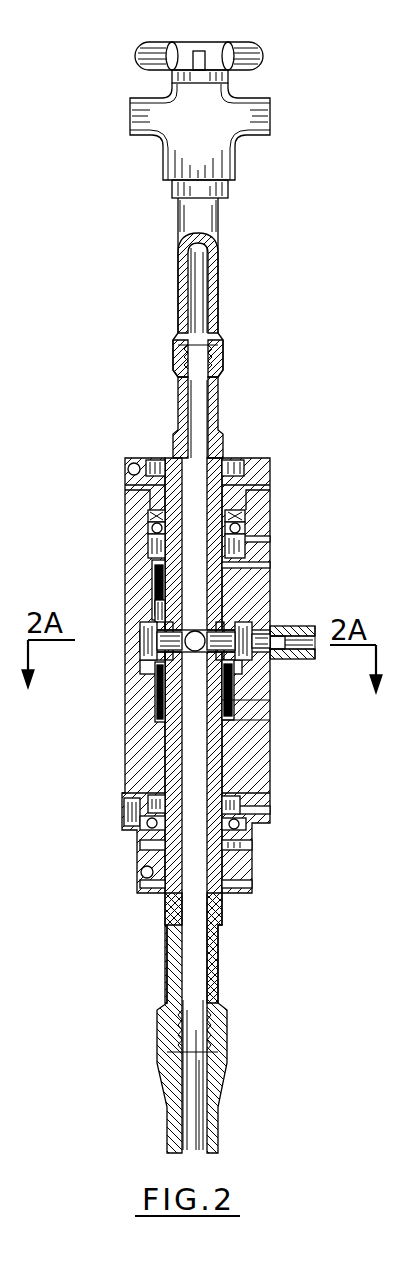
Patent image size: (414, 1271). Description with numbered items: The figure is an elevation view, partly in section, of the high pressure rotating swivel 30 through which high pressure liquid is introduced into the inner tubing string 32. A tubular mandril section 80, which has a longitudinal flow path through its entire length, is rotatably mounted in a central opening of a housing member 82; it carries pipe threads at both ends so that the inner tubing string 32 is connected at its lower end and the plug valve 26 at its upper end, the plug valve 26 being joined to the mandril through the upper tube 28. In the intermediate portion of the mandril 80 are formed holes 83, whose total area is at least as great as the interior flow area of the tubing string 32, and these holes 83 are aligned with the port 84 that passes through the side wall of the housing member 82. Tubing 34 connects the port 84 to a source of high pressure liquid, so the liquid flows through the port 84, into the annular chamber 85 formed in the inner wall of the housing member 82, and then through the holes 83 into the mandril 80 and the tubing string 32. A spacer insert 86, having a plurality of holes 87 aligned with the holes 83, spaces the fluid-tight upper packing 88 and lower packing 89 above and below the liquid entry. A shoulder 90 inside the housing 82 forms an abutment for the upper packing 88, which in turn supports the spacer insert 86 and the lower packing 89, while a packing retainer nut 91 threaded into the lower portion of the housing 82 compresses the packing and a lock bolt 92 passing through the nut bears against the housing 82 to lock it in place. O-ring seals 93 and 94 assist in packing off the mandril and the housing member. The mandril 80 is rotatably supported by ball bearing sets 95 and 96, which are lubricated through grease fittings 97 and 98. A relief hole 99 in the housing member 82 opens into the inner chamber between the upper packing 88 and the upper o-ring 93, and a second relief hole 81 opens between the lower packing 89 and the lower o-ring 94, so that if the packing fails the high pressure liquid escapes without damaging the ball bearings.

The plug valve 26 is at (158, 157).
The upper tube 28 is at (218, 268).
The high pressure rotating swivel 30 is at (272, 497).
The inner tubing string 32 is at (217, 1128).
The tubing 34 is at (292, 626).
The mandril section 80 is at (172, 428).
The second relief hole 81 is at (268, 717).
The housing member 82 is at (122, 745).
The holes 83 is at (196, 652).
The port 84 is at (262, 662).
The annular chamber 85 is at (150, 636).
The spacer insert 86 is at (165, 610).
The holes 87 is at (150, 645).
The upper packing 88 is at (160, 587).
The lower packing 89 is at (160, 691).
The shoulder 90 is at (160, 567).
The packing retainer nut 91 is at (140, 811).
The lock bolt 92 is at (125, 830).
The O-ring seal 93 is at (163, 548).
The O-ring seal 94 is at (150, 795).
The ball bearing set 95 is at (160, 527).
The ball bearing set 96 is at (255, 831).
The grease fitting 97 is at (268, 540).
The grease fitting 98 is at (265, 810).
The relief hole 99 is at (268, 566).